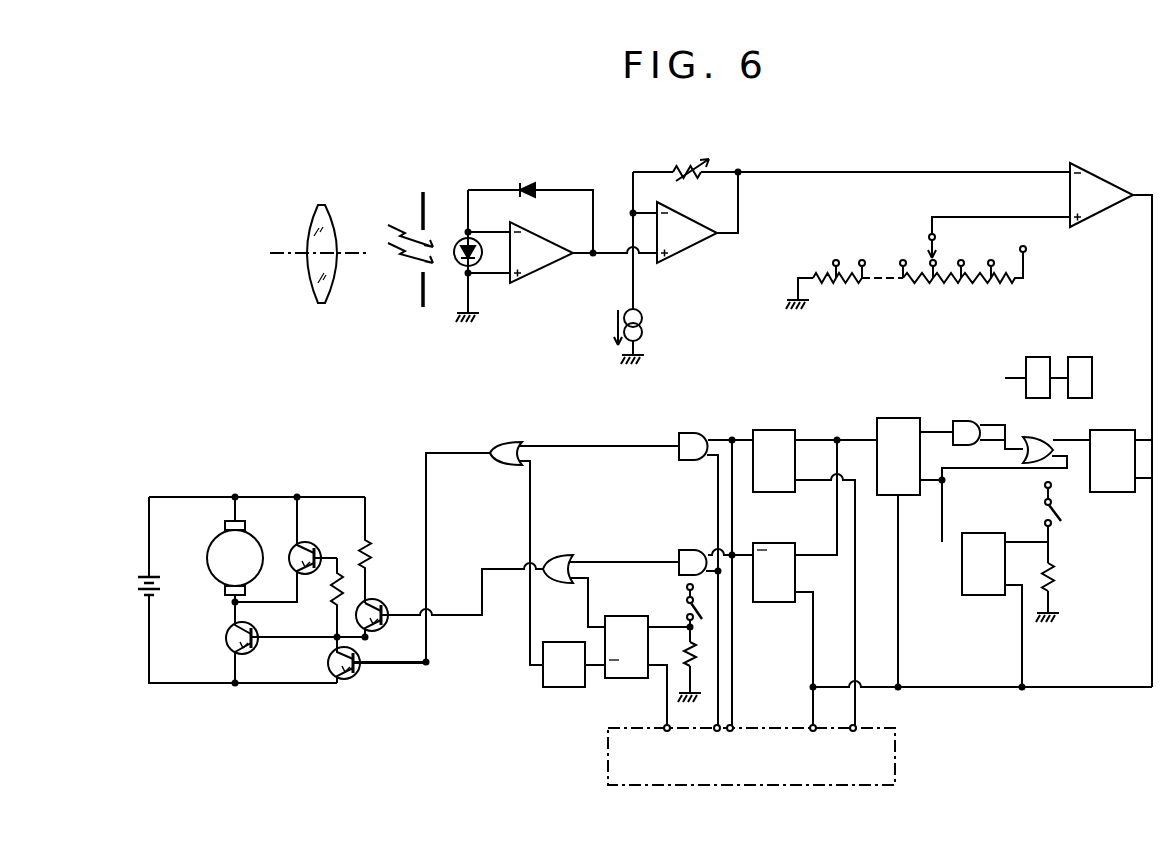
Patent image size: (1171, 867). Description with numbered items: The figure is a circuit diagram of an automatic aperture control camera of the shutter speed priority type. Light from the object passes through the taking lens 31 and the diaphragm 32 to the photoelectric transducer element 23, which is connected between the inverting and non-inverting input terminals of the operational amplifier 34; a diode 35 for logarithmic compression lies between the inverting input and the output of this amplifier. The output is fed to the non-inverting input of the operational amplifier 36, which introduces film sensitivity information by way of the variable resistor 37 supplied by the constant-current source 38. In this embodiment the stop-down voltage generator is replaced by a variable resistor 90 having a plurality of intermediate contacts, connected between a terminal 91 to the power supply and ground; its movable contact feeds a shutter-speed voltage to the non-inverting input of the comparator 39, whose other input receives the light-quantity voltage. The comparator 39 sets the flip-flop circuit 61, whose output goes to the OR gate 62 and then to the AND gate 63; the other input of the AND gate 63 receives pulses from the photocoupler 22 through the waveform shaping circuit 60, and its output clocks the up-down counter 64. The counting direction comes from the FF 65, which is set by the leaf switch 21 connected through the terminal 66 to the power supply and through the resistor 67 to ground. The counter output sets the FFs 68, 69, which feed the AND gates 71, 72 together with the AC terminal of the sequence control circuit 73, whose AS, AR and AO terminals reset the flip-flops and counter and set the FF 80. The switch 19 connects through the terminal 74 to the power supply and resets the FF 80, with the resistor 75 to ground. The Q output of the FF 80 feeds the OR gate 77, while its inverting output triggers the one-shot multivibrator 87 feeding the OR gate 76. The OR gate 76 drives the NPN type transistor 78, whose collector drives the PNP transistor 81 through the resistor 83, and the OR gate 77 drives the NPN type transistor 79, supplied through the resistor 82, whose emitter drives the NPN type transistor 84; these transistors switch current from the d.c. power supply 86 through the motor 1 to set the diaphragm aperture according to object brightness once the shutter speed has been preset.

The motor 1 is at (216, 550).
The switch 19 is at (686, 602).
The leaf switch 21 is at (1058, 507).
The photocoupler 22 is at (1082, 365).
The photoelectric transducer element 23 is at (462, 258).
The taking lens 31 is at (318, 220).
The diaphragm 32 is at (423, 207).
The operational amplifier 34 is at (548, 250).
The diode 35 is at (528, 186).
The operational amplifier 36 is at (692, 222).
The variable resistor 37 is at (683, 168).
The constant-current source 38 is at (644, 321).
The comparator 39 is at (1092, 182).
The waveform shaping circuit 60 is at (1035, 365).
The flip-flop circuit 61 is at (1112, 495).
The OR gate 62 is at (1045, 440).
The AND gate 63 is at (972, 420).
The up-down counter 64 is at (886, 418).
The flip-flop 65 is at (960, 580).
The terminal 66 is at (1044, 486).
The resistor 67 is at (1056, 580).
The flip-flop 68 is at (775, 430).
The flip-flop 69 is at (772, 602).
The AND gate 71 is at (697, 435).
The AND gate 72 is at (697, 550).
The sequence control circuit 73 is at (898, 744).
The terminal 74 is at (686, 586).
The resistor 75 is at (687, 650).
The OR gate 76 is at (505, 441).
The OR gate 77 is at (567, 566).
The NPN type transistor 78 is at (329, 664).
The NPN type transistor 79 is at (384, 607).
The flip-flop 80 is at (630, 678).
The PNP transistor 81 is at (318, 550).
The resistor 82 is at (369, 552).
The resistor 83 is at (334, 598).
The NPN type transistor 84 is at (227, 640).
The d.c. power supply 86 is at (142, 586).
The one-shot multivibrator 87 is at (563, 687).
The variable resistor 90 is at (908, 303).
The terminal 91 is at (1027, 249).